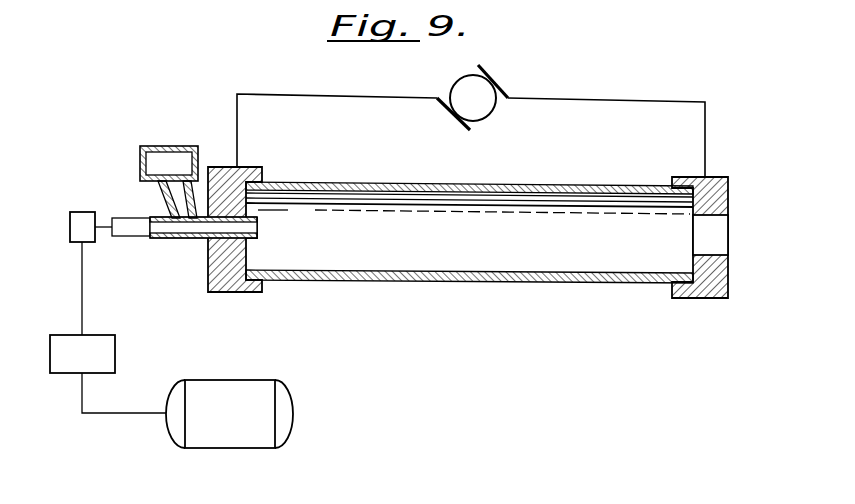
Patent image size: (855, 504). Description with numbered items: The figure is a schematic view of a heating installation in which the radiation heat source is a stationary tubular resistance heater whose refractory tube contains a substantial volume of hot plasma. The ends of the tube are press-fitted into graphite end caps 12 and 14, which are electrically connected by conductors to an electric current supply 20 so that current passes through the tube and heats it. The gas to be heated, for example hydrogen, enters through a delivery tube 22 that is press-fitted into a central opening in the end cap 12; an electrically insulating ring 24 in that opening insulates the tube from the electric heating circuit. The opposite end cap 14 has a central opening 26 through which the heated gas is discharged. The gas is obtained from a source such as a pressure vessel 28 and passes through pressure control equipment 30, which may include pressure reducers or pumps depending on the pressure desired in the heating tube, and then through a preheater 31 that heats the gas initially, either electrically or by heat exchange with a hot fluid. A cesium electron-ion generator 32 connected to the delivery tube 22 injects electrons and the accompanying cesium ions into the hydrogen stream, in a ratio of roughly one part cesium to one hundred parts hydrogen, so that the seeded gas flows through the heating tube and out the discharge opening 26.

The graphite end cap 12 is at (242, 293).
The graphite end cap 14 is at (729, 283).
The electric current supply 20 is at (494, 110).
The delivery tube 22 is at (168, 239).
The electrically insulating ring 24 is at (469, 232).
The central opening 26 is at (722, 227).
The pressure vessel 28 is at (265, 380).
The pressure control equipment 30 is at (116, 349).
The preheater 31 is at (82, 212).
The cesium electron-ion generator 32 is at (173, 145).